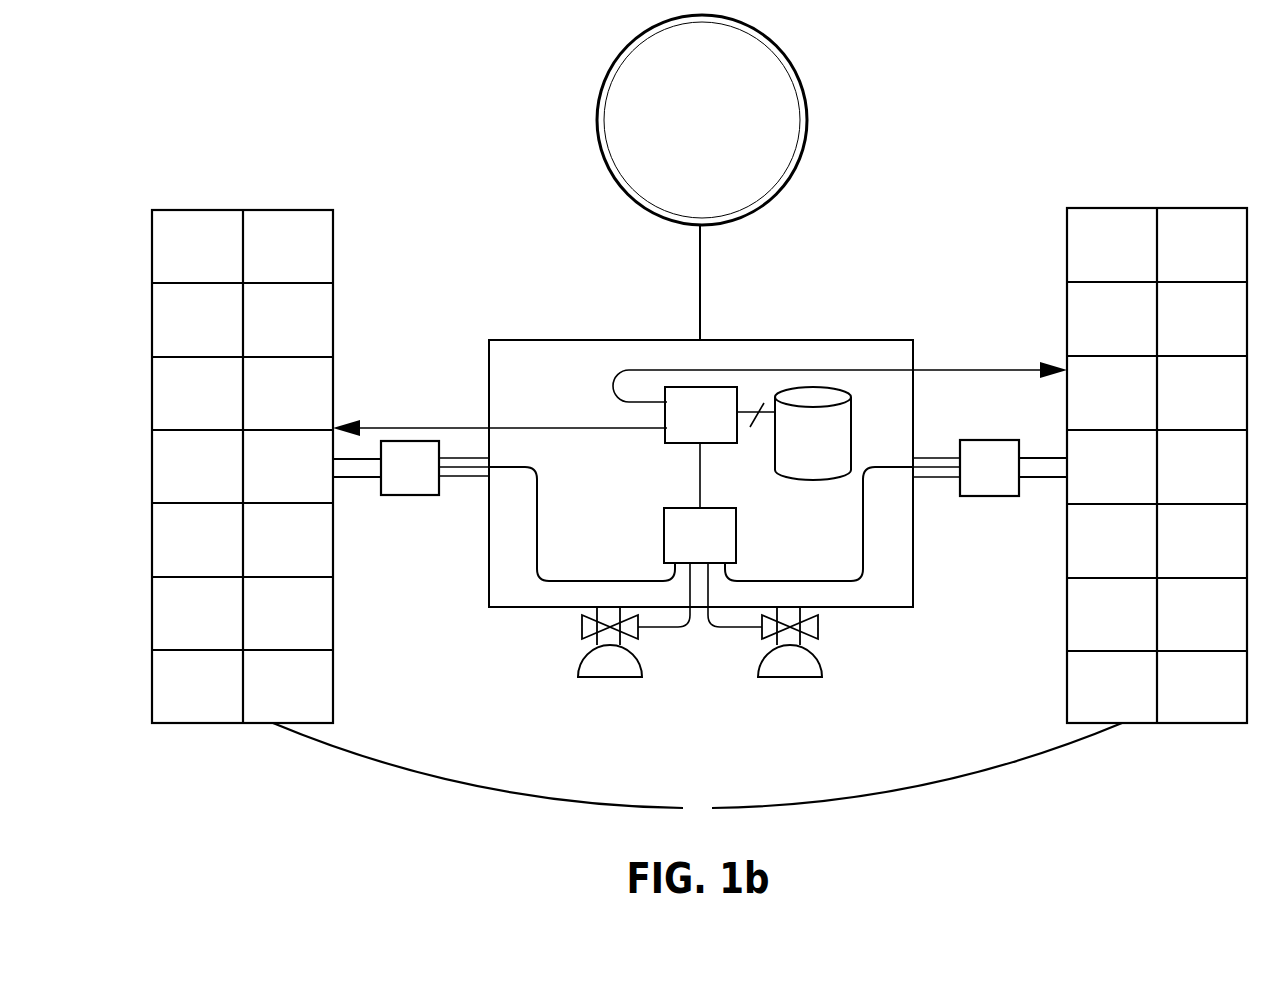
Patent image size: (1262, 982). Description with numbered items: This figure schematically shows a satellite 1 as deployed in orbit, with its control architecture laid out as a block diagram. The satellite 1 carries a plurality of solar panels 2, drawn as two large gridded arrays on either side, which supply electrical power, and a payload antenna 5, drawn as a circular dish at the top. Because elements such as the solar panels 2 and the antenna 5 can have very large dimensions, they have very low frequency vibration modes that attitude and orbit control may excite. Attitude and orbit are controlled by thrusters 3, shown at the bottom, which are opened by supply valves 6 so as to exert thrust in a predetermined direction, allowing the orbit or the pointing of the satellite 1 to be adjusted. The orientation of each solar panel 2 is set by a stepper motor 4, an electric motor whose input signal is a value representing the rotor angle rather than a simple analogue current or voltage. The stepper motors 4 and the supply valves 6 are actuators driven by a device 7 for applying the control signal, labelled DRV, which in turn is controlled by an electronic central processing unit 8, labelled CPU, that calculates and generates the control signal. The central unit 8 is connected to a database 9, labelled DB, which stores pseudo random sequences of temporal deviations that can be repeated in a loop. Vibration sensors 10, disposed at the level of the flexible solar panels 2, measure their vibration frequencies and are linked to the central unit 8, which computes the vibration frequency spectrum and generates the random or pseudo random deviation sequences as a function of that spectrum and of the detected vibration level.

The satellite 1 is at (545, 330).
The solar panels 2 is at (699, 526).
The thrusters 3 is at (622, 678).
The stepper motors 4 is at (392, 497).
The antenna 5 is at (780, 182).
The supply valves 6 is at (615, 637).
The device for applying the control signal 7 is at (664, 523).
The central processing unit 8 is at (727, 387).
The database 9 is at (835, 398).
The vibration sensors 10 is at (353, 418).